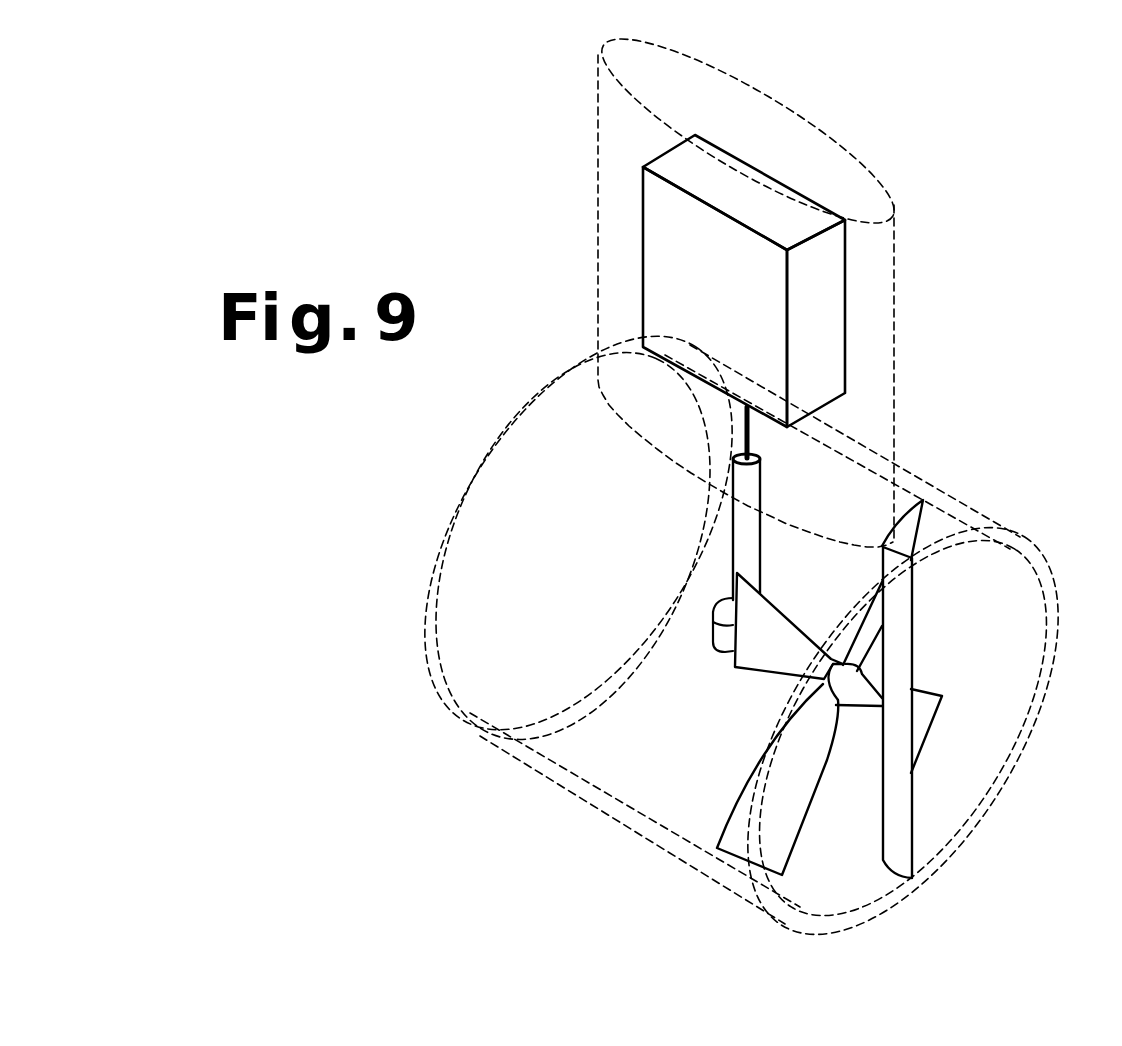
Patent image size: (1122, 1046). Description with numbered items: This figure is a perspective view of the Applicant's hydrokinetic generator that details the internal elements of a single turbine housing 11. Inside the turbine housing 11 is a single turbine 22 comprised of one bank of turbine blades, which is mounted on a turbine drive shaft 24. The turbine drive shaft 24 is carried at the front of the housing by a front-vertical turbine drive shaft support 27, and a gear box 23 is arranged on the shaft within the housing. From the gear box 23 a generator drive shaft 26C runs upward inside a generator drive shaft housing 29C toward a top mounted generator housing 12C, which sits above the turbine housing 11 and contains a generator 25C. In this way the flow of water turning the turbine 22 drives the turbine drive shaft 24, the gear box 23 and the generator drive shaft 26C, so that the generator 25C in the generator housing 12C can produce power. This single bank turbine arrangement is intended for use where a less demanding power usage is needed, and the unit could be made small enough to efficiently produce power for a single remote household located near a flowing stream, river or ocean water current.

The turbine housing 11 is at (1058, 619).
The generator housing 12C is at (893, 205).
The turbine 22 is at (812, 790).
The gear box 23 is at (727, 638).
The turbine drive shaft 24 is at (840, 701).
The generator 25C is at (749, 287).
The generator drive shaft 26C is at (752, 447).
The front-vertical turbine drive shaft support 27 is at (905, 641).
The generator drive shaft housing 29C is at (750, 497).